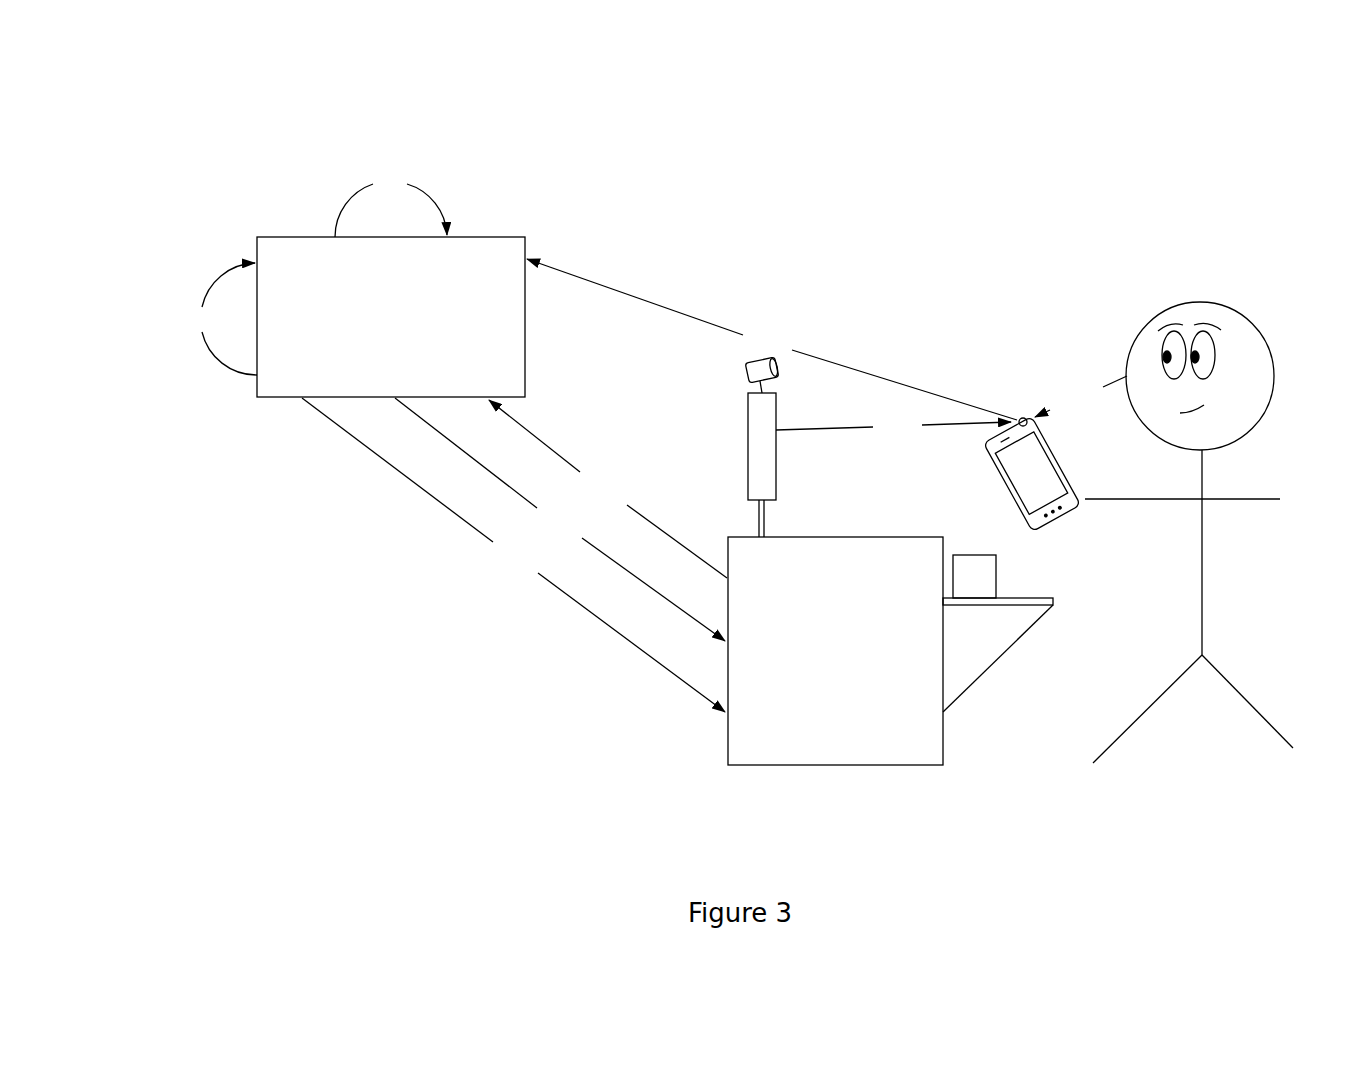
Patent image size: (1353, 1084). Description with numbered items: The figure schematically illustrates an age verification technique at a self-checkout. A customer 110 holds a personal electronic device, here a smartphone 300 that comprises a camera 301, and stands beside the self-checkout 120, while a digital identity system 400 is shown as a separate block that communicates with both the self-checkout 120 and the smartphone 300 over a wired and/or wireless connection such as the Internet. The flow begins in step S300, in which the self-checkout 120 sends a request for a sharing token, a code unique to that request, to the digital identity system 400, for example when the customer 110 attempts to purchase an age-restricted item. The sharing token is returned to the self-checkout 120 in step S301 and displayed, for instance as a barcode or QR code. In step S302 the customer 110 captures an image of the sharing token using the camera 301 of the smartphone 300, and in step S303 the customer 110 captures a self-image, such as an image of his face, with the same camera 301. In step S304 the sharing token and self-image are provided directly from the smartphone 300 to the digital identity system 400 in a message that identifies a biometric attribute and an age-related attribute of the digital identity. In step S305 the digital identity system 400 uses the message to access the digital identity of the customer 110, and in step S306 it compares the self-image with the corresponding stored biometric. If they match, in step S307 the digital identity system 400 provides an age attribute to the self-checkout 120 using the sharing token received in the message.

The smartphone 300 is at (258, 172).
The camera 301 is at (1019, 418).
The customer 110 is at (1243, 318).
The self-checkout 120 is at (820, 767).
The digital identity system 400 is at (391, 317).
The step of sending a request for a sharing token S300 is at (608, 489).
The step of providing the sharing token S301 is at (560, 519).
The step of capturing an image of the sharing token S302 is at (893, 426).
The step of capturing a self-image S303 is at (1081, 396).
The step of providing the sharing token and self-image S304 is at (772, 339).
The step of accessing the digital identity S305 is at (391, 201).
The step of comparing the self-image S306 is at (214, 319).
The step of providing the age attribute S307 is at (513, 555).